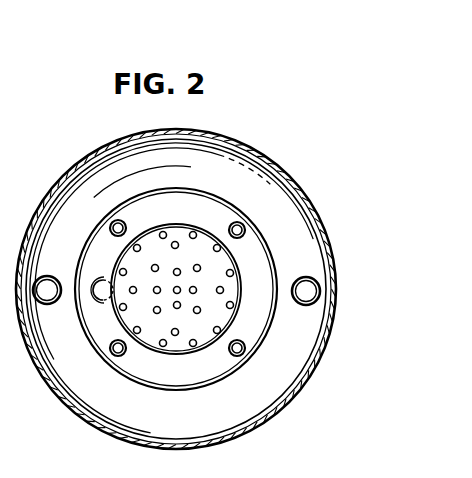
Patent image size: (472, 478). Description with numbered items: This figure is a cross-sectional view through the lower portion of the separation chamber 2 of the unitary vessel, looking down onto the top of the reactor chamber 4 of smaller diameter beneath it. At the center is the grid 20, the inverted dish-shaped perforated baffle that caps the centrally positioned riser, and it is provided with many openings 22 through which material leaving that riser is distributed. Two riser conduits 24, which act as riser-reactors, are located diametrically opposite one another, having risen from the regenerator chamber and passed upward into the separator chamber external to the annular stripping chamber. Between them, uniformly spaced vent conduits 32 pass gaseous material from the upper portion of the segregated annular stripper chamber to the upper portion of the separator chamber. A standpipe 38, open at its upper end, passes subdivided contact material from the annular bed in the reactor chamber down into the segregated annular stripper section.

The separation chamber 2 is at (236, 142).
The reactor chamber 4 is at (213, 195).
The perforated baffle or grid member 20 is at (178, 353).
The openings 22 is at (192, 231).
The vent conduit 32 is at (110, 226).
The riser conduit 24 is at (48, 304).
The standpipe 38 is at (102, 280).